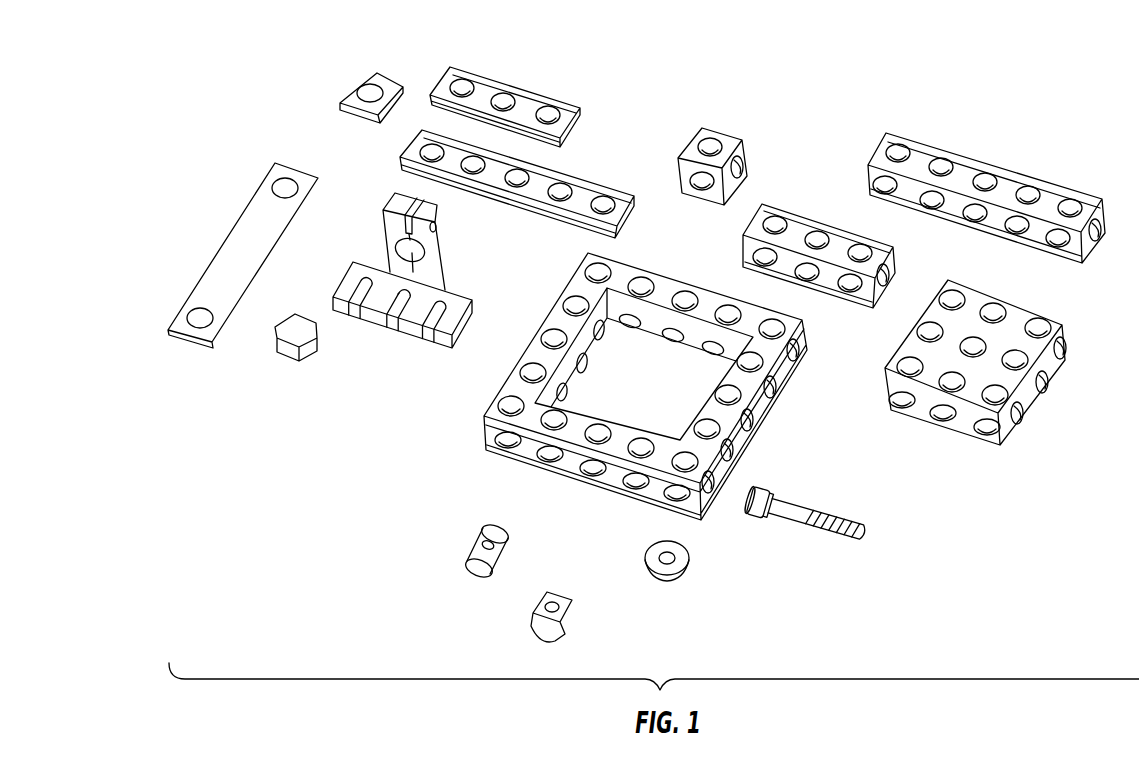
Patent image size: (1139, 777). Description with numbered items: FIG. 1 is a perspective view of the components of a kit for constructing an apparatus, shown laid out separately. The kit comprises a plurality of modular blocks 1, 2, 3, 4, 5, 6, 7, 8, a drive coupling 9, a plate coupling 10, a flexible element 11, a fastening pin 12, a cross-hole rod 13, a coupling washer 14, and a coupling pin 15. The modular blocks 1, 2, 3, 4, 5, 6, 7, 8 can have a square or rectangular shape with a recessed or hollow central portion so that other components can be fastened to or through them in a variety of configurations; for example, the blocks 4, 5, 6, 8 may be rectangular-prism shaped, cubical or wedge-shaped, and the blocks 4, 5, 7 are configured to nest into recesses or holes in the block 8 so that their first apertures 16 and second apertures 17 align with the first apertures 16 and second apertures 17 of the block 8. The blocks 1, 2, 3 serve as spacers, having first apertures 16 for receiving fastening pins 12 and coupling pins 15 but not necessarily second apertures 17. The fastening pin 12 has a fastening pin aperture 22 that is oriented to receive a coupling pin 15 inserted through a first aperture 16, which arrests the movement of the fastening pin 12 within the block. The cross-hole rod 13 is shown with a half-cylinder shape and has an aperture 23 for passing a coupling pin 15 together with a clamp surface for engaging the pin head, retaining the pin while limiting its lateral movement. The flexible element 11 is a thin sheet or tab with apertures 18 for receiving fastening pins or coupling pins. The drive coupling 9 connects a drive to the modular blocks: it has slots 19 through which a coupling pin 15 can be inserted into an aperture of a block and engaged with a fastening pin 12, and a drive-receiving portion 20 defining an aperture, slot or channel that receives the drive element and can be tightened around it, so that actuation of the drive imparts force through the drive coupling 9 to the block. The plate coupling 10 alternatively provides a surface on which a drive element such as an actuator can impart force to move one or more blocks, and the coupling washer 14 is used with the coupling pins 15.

The modular block 1 is at (395, 82).
The modular block 2 is at (528, 90).
The modular block 3 is at (614, 187).
The modular block 4 is at (736, 136).
The modular block 5 is at (824, 213).
The modular block 6 is at (996, 168).
The modular block 7 is at (1064, 324).
The modular block 8 is at (765, 400).
The drive coupling 9 is at (449, 340).
The plate coupling 10 is at (312, 362).
The flexible element 11 is at (201, 348).
The fastening pin 12 is at (468, 556).
The cross-hole rod 13 is at (534, 623).
The coupling washer 14 is at (667, 578).
The coupling pin 15 is at (778, 520).
The first aperture 16 is at (371, 88).
The second aperture 17 is at (700, 186).
The aperture 18 is at (286, 185).
The slot 19 is at (402, 318).
The drive-receiving portion 20 is at (412, 254).
The fastening pin aperture 22 is at (488, 543).
The T-nut hole 23 is at (553, 605).